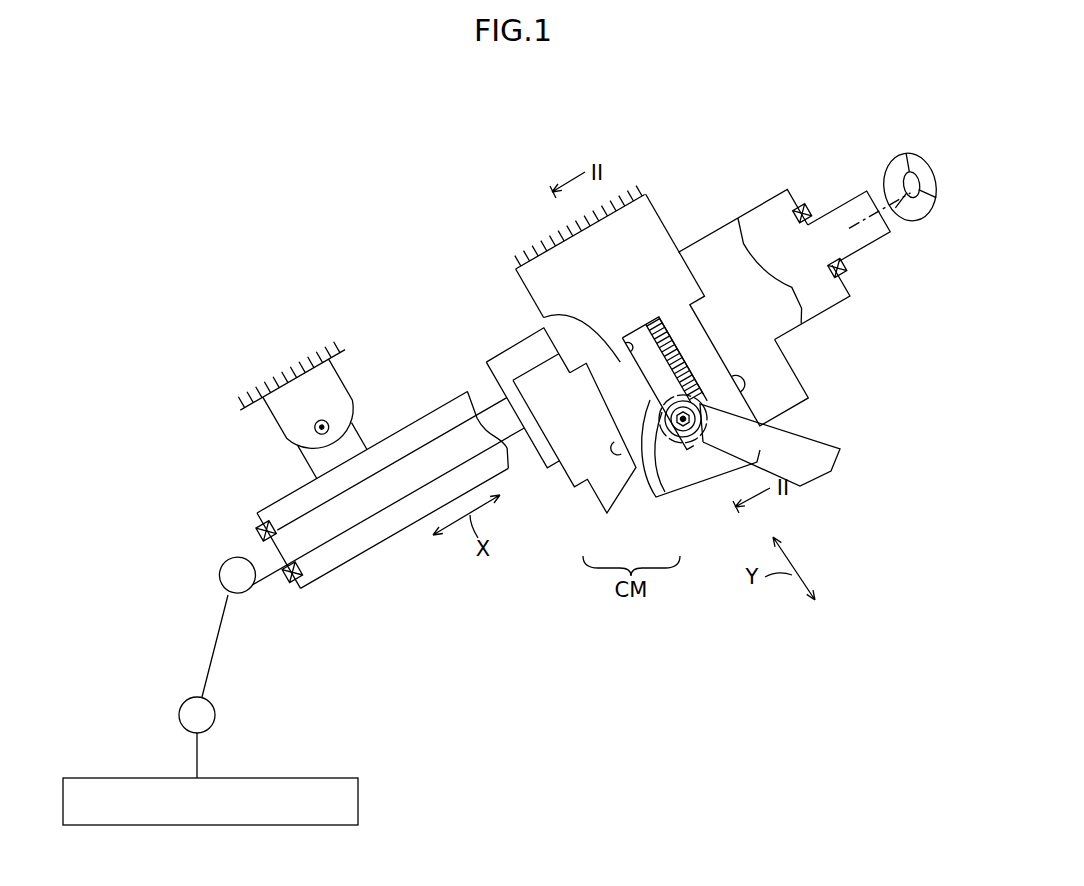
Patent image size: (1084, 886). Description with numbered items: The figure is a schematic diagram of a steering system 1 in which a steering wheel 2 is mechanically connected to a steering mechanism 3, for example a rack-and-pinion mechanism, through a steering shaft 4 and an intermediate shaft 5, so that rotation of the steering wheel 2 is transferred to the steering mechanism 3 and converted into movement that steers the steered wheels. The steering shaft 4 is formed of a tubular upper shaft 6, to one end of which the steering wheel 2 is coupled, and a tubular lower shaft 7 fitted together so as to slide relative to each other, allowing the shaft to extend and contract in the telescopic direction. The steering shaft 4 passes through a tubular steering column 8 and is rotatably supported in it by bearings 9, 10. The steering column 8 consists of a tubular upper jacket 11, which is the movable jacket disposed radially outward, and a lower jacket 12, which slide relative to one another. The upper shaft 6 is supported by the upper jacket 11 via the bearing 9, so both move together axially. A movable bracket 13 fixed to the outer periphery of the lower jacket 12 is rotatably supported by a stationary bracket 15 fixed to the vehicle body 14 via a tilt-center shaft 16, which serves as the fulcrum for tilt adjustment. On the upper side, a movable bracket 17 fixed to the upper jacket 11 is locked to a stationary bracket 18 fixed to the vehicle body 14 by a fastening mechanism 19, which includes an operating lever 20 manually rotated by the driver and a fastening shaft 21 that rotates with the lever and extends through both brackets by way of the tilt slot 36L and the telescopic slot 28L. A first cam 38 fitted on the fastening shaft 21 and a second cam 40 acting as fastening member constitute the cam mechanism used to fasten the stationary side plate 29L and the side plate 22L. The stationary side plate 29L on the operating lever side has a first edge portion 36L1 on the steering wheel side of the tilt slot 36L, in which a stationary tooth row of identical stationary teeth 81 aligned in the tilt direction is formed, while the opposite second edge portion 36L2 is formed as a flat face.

The steering system 1 is at (318, 270).
The steering wheel 2 is at (892, 155).
The steering mechanism 3 is at (360, 800).
The steering shaft 4 is at (830, 210).
The intermediate shaft 5 is at (217, 657).
The upper shaft 6 is at (872, 233).
The lower shaft 7 is at (387, 497).
The steering column 8 is at (828, 314).
The bearing 9 is at (847, 268).
The bearing 10 is at (283, 585).
The upper jacket 11 is at (738, 216).
The lower jacket 12 is at (442, 408).
The movable bracket 13 is at (310, 462).
The vehicle body 14 is at (511, 258).
The stationary bracket 15 is at (283, 427).
The tilt-center shaft 16 is at (324, 426).
The movable bracket 17 is at (807, 386).
The stationary bracket 18 is at (519, 287).
The fastening mechanism 19 is at (722, 452).
The operating lever 20 is at (797, 434).
The fastening shaft 21 is at (683, 431).
The left side plate 22L is at (568, 470).
The telescopic slot 28L is at (607, 450).
The stationary side plate 29L is at (660, 227).
The tilt slot 36L is at (627, 343).
The first edge portion 36L1 is at (628, 332).
The second edge portion 36L2 is at (541, 317).
The first cam 38 is at (657, 473).
The second cam 40 is at (643, 478).
The stationary teeth 81 is at (672, 343).